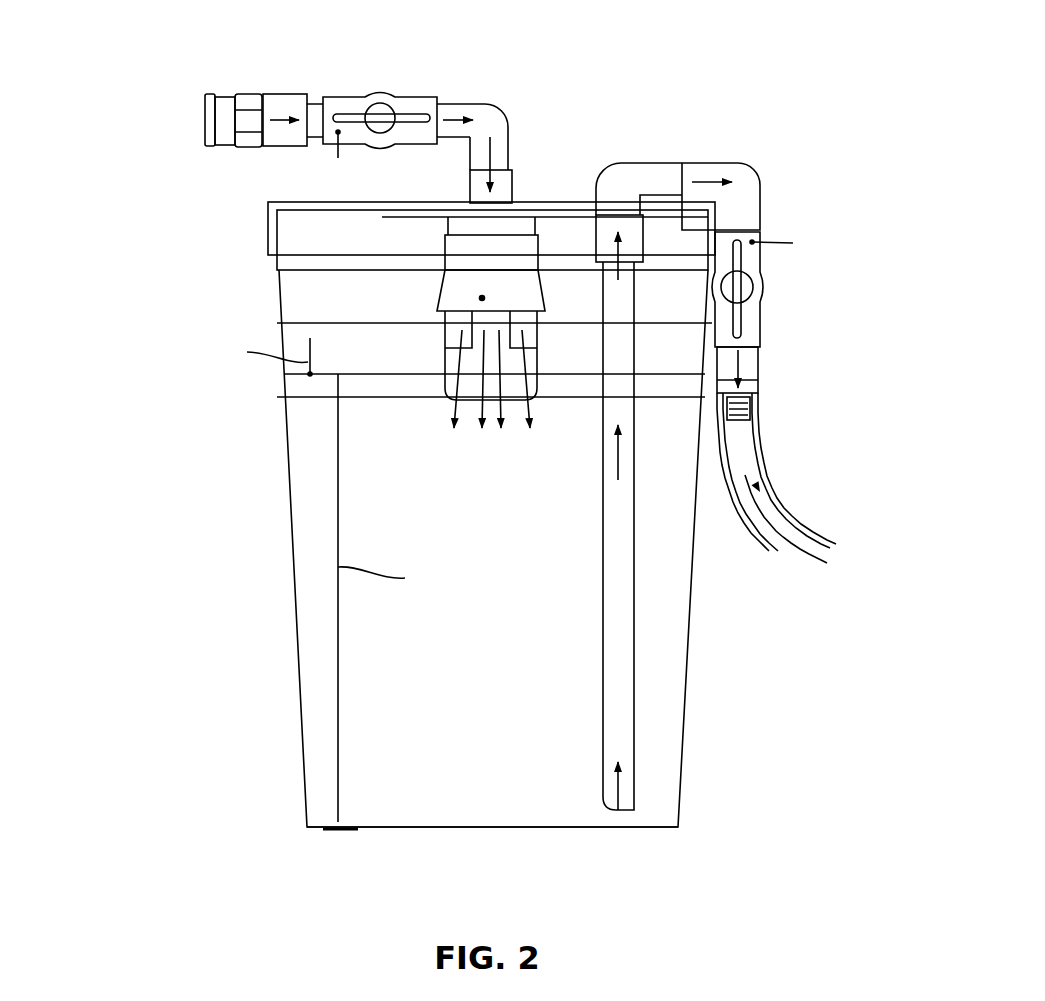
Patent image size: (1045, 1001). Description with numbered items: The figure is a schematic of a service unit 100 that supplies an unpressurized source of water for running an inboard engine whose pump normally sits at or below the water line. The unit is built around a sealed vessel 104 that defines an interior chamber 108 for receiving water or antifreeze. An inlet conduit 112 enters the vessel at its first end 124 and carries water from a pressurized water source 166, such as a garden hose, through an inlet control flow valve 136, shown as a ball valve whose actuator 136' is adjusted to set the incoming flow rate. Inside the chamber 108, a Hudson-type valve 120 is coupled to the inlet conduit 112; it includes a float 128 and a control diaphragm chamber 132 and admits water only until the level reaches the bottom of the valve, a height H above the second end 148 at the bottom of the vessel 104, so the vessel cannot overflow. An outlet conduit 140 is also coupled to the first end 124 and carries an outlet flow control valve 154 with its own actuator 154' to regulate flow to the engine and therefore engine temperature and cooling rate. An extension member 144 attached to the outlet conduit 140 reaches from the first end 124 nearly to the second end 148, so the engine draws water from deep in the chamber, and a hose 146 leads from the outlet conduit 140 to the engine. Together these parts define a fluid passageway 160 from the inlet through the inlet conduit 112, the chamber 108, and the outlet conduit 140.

The service unit 100 is at (752, 112).
The vessel 104 is at (650, 829).
The chamber 108 is at (337, 587).
The inlet conduit 112 is at (478, 104).
The valve 120 is at (440, 281).
The first end 124 is at (270, 203).
The float 128 is at (444, 236).
The control diaphragm chamber 132 is at (480, 298).
The inlet control flow valve 136 is at (390, 104).
The actuator 136' is at (387, 74).
The outlet conduit 140 is at (762, 362).
The extension member 144 is at (603, 550).
The hose 146 is at (807, 527).
The second end 148 is at (325, 830).
The outlet flow control valve 154 is at (818, 278).
The actuator 154' is at (785, 287).
The fluid passageway 160 is at (277, 115).
The pressurized water source 166 is at (203, 121).